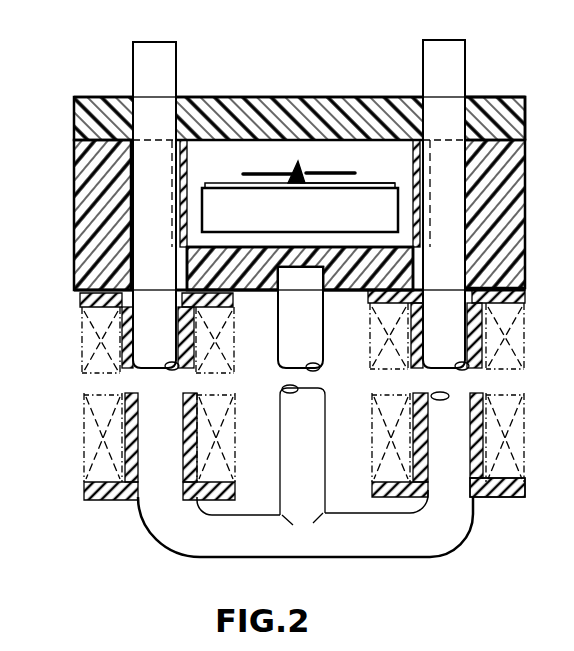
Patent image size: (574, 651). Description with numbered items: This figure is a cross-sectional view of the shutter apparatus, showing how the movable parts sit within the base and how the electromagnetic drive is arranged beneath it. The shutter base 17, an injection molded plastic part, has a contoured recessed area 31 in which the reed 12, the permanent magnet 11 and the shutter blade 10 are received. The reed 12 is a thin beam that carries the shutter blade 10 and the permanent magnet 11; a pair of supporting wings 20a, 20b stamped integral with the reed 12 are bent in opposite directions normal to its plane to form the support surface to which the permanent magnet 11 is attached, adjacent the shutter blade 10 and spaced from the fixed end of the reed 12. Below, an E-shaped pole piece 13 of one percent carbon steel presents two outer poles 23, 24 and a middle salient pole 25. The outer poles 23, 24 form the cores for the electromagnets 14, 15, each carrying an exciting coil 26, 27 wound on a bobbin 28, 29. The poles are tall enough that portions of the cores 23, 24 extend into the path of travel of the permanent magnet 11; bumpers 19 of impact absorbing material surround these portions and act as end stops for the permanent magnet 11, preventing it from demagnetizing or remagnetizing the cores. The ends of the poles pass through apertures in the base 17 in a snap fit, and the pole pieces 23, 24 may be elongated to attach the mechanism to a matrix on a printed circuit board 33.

The shutter blade 10 is at (357, 172).
The permanent magnet 11 is at (316, 222).
The reed 12 is at (300, 172).
The E-shaped pole piece 13 is at (357, 557).
The electromagnet 14 is at (123, 519).
The electromagnet 15 is at (488, 58).
The shutter base 17 is at (512, 191).
The bumpers 19 is at (215, 100).
The permanent magnet supporting wing 20a is at (214, 180).
The permanent magnet supporting wing 20b is at (394, 172).
The outer pole 23 is at (150, 70).
The outer pole 24 is at (440, 65).
The middle salient pole 25 is at (312, 348).
The exciting coil 26 is at (262, 428).
The exciting coil 27 is at (530, 418).
The bobbin 28 is at (205, 502).
The bobbin 29 is at (486, 500).
The contoured recessed area 31 is at (408, 220).
The printed circuit board 33 is at (527, 121).